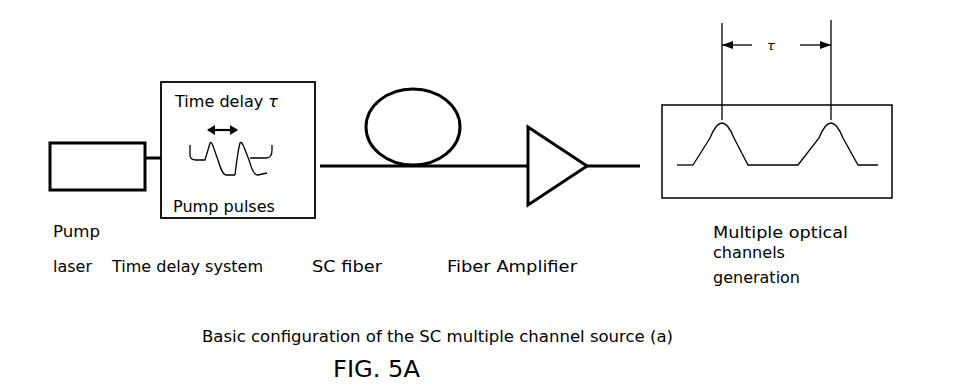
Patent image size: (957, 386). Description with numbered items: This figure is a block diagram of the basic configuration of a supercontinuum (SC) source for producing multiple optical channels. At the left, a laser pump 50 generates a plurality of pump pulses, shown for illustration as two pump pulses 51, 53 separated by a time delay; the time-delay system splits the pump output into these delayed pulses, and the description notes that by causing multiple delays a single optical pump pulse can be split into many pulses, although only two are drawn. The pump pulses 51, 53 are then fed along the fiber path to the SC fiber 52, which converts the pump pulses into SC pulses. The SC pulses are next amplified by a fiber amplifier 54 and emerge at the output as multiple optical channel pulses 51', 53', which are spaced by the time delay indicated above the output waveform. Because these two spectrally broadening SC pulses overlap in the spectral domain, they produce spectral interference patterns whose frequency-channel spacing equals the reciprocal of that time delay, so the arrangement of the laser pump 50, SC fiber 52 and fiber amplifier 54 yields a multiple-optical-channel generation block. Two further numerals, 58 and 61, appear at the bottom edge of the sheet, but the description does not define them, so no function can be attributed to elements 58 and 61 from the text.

The laser pump 50 is at (75, 143).
The pump pulse 51 is at (209, 151).
The pump pulse 53 is at (253, 148).
The SC fiber 52 is at (382, 97).
The fiber amplifier 54 is at (562, 147).
The optical channel pulse 51' is at (740, 118).
The optical channel pulse 53' is at (835, 118).
The component of adjacent figure 58 is at (172, 385).
The component of adjacent figure 61 is at (720, 385).